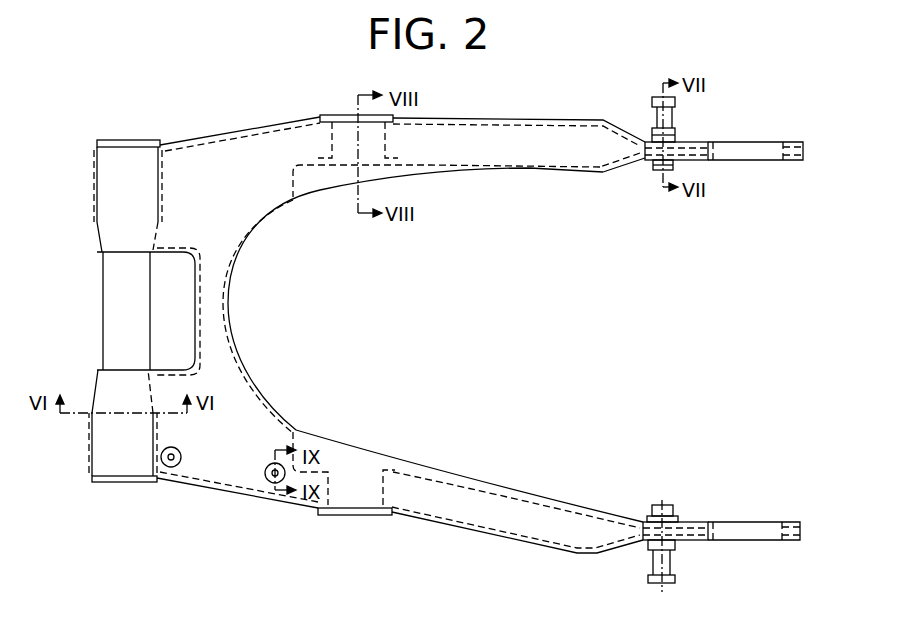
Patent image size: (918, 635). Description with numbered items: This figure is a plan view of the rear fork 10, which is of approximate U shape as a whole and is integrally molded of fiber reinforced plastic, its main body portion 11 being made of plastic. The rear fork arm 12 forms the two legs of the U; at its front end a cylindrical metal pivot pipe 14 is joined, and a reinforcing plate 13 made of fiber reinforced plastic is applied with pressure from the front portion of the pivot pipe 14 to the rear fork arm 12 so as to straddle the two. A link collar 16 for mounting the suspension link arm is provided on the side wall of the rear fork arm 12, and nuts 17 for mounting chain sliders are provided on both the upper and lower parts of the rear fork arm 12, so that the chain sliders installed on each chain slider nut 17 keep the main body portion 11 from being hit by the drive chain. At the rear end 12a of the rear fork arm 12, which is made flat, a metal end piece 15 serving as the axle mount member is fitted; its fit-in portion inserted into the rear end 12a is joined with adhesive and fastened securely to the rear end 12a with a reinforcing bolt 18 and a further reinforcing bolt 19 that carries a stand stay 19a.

The rear fork 10 is at (614, 347).
The main body portion 11 is at (235, 400).
The rear fork arm 12 is at (463, 477).
The rear end 12a is at (693, 518).
The reinforcing plate 13 is at (103, 198).
The pivot pipe 14 is at (113, 318).
The end piece 15 is at (760, 522).
The link collar 16 is at (370, 515).
The chain slider nut 17 is at (171, 467).
The reinforcing bolt 18 is at (650, 512).
The reinforcing bolt 19 is at (667, 583).
The stand stay 19a is at (672, 567).